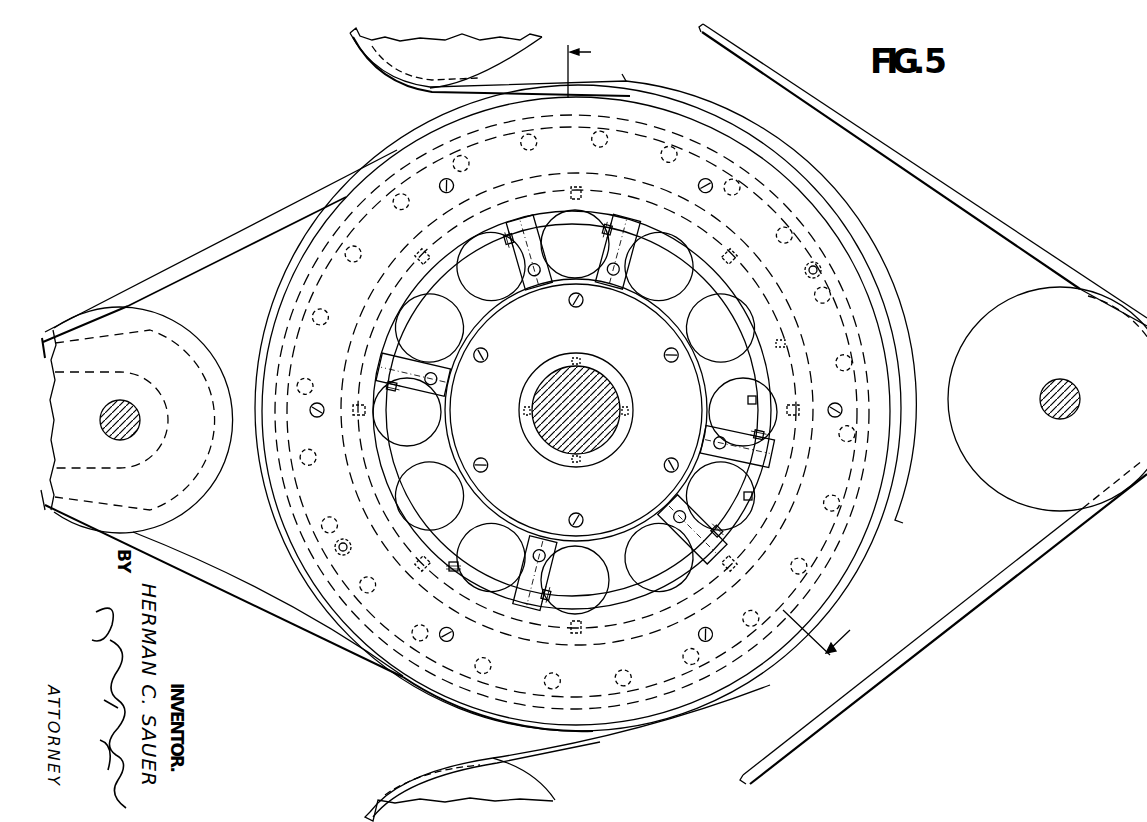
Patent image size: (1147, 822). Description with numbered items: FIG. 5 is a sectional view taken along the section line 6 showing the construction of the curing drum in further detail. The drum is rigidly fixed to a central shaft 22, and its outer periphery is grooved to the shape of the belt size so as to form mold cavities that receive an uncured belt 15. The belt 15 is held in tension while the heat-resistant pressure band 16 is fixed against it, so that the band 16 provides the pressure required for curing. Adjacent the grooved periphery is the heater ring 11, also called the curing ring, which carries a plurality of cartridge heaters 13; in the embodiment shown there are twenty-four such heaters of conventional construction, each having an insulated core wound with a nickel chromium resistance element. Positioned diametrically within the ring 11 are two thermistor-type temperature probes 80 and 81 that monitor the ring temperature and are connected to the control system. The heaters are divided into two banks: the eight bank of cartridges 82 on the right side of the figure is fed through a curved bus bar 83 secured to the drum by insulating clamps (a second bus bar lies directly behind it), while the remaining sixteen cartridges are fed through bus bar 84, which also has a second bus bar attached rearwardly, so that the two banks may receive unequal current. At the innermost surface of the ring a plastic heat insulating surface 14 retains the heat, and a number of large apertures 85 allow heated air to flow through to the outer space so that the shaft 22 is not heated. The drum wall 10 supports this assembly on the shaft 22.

The section line 6- 6 is at (695, 359).
The rotary drum housing 10 is at (318, 240).
The heater ring 11 is at (330, 283).
The cartridge heaters 13 is at (406, 223).
The plastic heat insulating surface 14 is at (358, 343).
The uncured belt 15 is at (303, 637).
The heat-resistant pressure band 16 is at (884, 146).
The central shaft 22 is at (596, 440).
The temperature probe 80 is at (808, 278).
The temperature probe 81 is at (335, 548).
The eight bank of cartridges 82 is at (878, 242).
The curved bus bar 83 is at (785, 343).
The bus bar 84 is at (454, 572).
The large apertures 85 is at (757, 398).